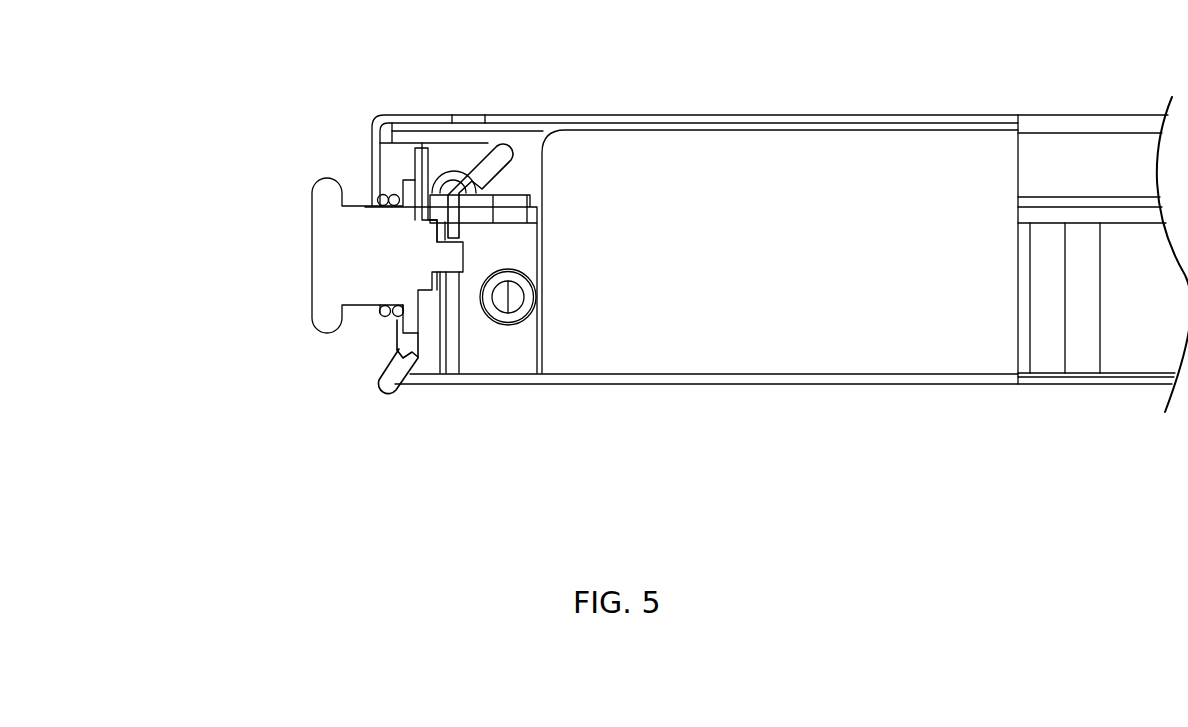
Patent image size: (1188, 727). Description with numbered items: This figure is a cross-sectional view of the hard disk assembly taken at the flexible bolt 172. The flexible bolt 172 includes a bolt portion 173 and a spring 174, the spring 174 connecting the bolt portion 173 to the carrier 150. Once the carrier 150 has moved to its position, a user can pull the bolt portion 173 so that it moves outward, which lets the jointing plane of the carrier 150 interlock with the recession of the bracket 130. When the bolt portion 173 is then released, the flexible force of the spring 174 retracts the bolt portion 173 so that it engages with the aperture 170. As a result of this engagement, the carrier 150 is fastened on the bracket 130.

The bracket 130 is at (490, 157).
The carrier 150 is at (593, 125).
The aperture 170 is at (455, 271).
The flexible bolt 172 is at (300, 240).
The bolt portion 173 is at (345, 238).
The spring 174 is at (382, 195).